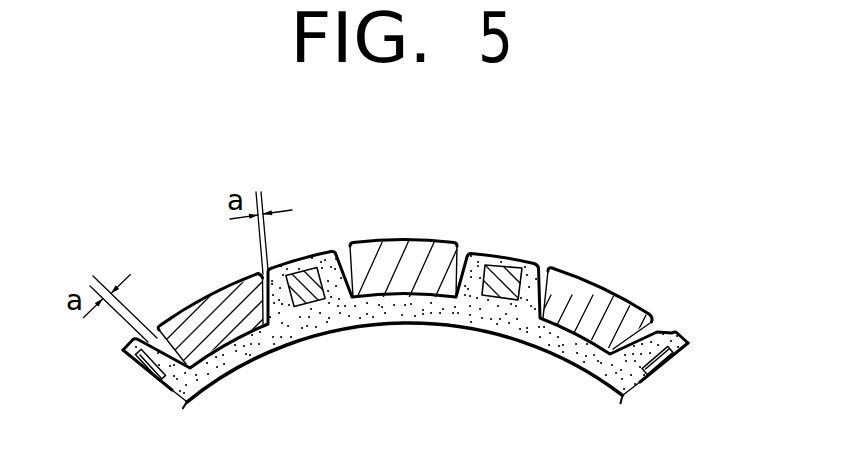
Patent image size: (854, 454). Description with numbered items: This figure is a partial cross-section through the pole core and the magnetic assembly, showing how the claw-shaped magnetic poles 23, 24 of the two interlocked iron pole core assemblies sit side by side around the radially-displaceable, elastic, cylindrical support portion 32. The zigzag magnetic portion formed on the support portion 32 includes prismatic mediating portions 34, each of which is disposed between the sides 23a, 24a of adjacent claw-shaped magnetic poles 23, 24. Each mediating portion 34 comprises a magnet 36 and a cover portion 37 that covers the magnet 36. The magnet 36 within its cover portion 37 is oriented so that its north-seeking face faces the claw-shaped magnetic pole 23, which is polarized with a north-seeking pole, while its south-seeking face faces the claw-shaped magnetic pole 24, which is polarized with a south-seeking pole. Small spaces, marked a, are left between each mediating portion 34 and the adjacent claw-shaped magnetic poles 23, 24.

The claw-shaped magnetic pole 23 is at (208, 299).
The side of claw-shaped magnetic pole 23a is at (677, 338).
The claw-shaped magnetic pole 24 is at (410, 244).
The side of claw-shaped magnetic pole 24a is at (473, 252).
The support portion 32 is at (342, 318).
The mediating portion 34 is at (532, 259).
The magnet 36 is at (505, 267).
The cover portion 37 is at (327, 257).